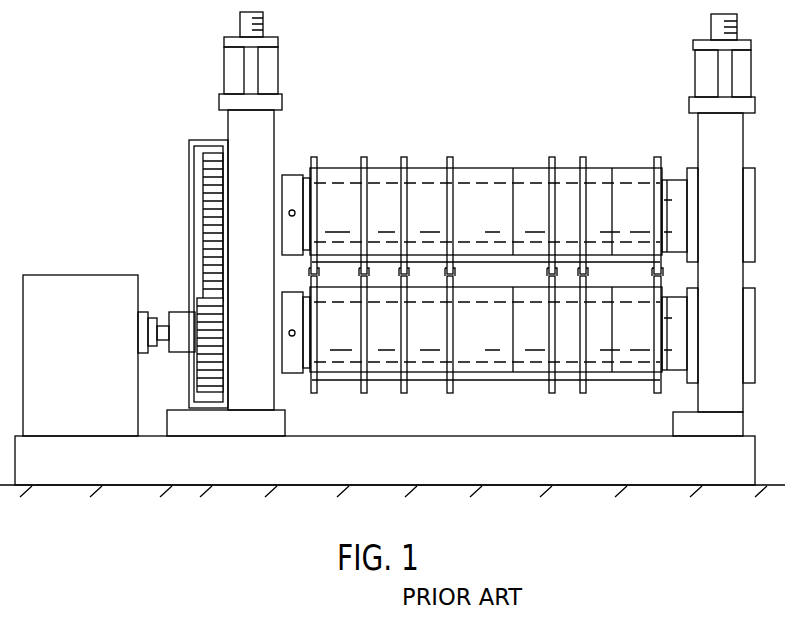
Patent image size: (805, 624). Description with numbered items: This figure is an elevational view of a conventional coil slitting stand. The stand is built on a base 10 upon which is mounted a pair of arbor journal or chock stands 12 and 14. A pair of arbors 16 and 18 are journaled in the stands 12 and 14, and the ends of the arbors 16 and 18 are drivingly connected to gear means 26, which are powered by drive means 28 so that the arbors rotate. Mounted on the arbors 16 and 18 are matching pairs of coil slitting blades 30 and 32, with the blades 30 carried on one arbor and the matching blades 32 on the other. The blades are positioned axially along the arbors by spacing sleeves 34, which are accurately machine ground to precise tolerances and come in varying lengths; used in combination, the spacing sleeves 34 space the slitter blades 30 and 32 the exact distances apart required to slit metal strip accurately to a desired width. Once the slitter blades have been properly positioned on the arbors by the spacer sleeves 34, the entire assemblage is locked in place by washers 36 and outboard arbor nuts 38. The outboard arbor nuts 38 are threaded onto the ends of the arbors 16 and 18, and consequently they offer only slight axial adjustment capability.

The base 10 is at (675, 476).
The arbor journal or chock stand 12 is at (272, 135).
The arbor journal or chock stand 14 is at (706, 134).
The arbor 16 is at (522, 185).
The arbor 18 is at (527, 364).
The gear means 26 is at (208, 234).
The drive means 28 is at (80, 284).
The coil slitting blade 30 is at (404, 158).
The coil slitting blade 32 is at (318, 392).
The spacing sleeve 34 is at (380, 172).
The washer 36 is at (680, 212).
The outboard arbor nut 38 is at (292, 178).